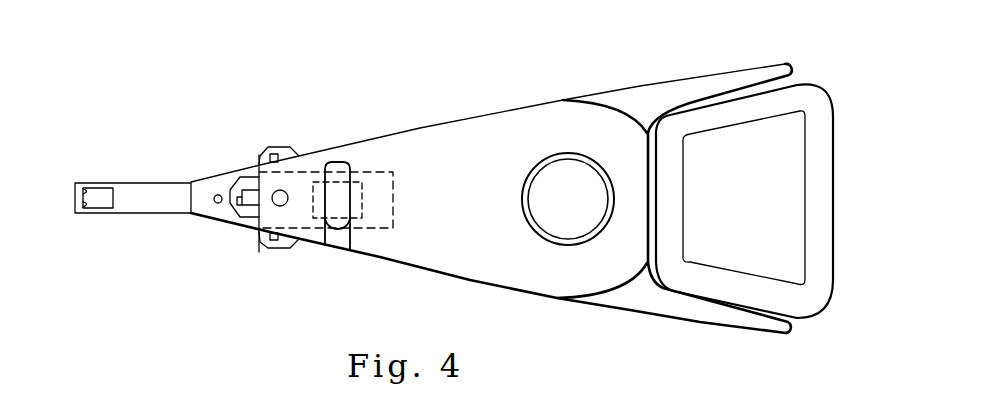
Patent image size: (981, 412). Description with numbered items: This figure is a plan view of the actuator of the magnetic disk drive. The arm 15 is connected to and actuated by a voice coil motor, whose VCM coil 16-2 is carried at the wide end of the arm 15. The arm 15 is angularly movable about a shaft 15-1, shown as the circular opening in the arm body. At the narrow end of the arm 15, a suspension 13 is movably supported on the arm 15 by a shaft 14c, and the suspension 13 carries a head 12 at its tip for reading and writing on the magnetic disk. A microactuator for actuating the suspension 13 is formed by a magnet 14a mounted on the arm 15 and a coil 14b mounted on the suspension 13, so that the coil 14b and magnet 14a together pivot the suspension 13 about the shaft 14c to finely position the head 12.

The head 12 is at (104, 188).
The suspension 13 is at (148, 206).
The magnet 14a is at (342, 170).
The coil 14b is at (355, 216).
The shaft 14c is at (284, 203).
The arm 15 is at (472, 128).
The shaft 15-1 is at (553, 202).
The VCM coil 16-2 is at (810, 97).